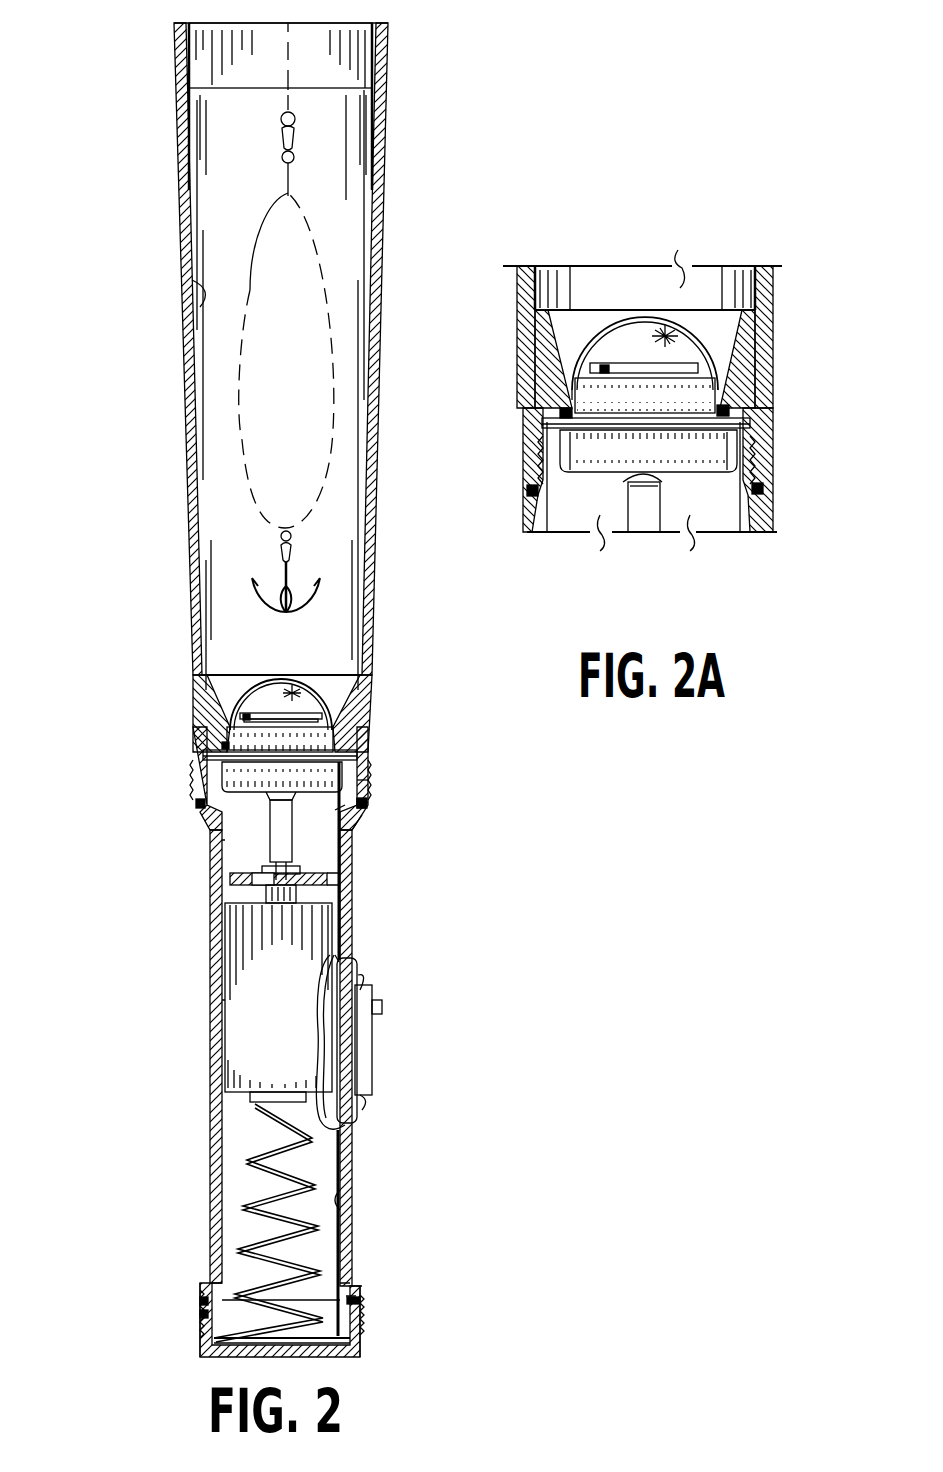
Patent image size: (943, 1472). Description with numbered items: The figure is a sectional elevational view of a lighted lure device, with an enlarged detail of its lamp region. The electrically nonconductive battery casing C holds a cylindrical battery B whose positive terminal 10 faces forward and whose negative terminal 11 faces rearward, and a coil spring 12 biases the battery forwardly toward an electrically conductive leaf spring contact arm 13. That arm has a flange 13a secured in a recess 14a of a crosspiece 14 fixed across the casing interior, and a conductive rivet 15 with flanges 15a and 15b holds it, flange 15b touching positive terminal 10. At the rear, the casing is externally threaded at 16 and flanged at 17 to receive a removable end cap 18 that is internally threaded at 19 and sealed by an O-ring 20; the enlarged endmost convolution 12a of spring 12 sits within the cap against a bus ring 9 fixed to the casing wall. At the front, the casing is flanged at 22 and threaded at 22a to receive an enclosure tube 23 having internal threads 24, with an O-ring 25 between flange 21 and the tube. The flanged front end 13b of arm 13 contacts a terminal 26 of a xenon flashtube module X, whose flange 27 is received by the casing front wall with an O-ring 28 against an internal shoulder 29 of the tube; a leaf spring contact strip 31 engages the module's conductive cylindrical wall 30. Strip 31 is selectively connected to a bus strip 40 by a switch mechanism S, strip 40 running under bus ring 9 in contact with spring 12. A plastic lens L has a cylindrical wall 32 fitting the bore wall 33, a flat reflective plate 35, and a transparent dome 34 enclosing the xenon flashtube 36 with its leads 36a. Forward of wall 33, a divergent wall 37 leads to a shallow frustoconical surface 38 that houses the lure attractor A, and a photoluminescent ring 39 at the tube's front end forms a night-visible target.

In FIG. 2, the photoluminescent ring 39 is at (335, 48).
In FIG. 2, the lure attractor A is at (290, 215).
In FIG. 2, the enclosure tube 23 is at (178, 232).
In FIG. 2, the frustoconical internal surface 38 is at (195, 288).
In FIG. 2, the divergent wall 37 is at (228, 705).
In FIG. 2, the bore wall 33 is at (192, 730).
In FIG. 2, the internal shoulder 29 is at (190, 734).
In FIG. 2A, the internal shoulder 29 is at (730, 408).
In FIG. 2, the front flange 22 is at (200, 805).
In FIG. 2, the external threads 22a is at (197, 788).
In FIG. 2, the leaf spring contact arm 13 is at (275, 820).
In FIG. 2A, the leaf spring contact arm 13 is at (645, 522).
In FIG. 2, the front flange of contact arm 13b is at (278, 830).
In FIG. 2, the contact arm flange 13a is at (266, 845).
In FIG. 2, the crosspiece 14 is at (235, 878).
In FIG. 2, the positive terminal 10 is at (208, 905).
In FIG. 2, the battery casing C is at (208, 945).
In FIG. 2, the battery B is at (237, 1003).
In FIG. 2, the negative terminal 11 is at (255, 1098).
In FIG. 2, the coil spring 12 is at (262, 1200).
In FIG. 2, the endmost convolution 12a is at (346, 1348).
In FIG. 2, the bus strip 40 is at (352, 1194).
In FIG. 2, the switch mechanism S is at (372, 1028).
In FIG. 2, the rivet 15 is at (345, 842).
In FIG. 2, the upper rivet flange 15a is at (343, 852).
In FIG. 2, the lower rivet flange 15b is at (343, 910).
In FIG. 2, the recess 14a is at (347, 937).
In FIG. 2, the internal threads of enclosure tube 24 is at (363, 795).
In FIG. 2, the front sealing O-ring 25 is at (367, 802).
In FIG. 2, the flange 21 is at (360, 813).
In FIG. 2, the rear sealing O-ring 20 is at (202, 1300).
In FIG. 2, the bus ring 9 is at (232, 1300).
In FIG. 2, the rear flange 17 is at (212, 1298).
In FIG. 2, the external rear threads 16 is at (205, 1315).
In FIG. 2, the internal threads of end cap 19 is at (360, 1317).
In FIG. 2, the end cap 18 is at (363, 1342).
In FIG. 2A, the lens L is at (612, 345).
In FIG. 2A, the transparent dome portion 34 is at (618, 362).
In FIG. 2A, the xenon flashtube 36 is at (631, 362).
In FIG. 2A, the flat reflective plate 35 is at (672, 387).
In FIG. 2A, the leads 36a is at (753, 308).
In FIG. 2A, the cylindrical wall of lens 32 is at (717, 378).
In FIG. 2A, the xenon flashtube module X is at (560, 395).
In FIG. 2A, the module sealing O-ring 28 is at (562, 412).
In FIG. 2A, the conductive cylindrical wall 30 is at (742, 446).
In FIG. 2A, the module terminal 26 is at (620, 478).
In FIG. 2A, the module flange 27 is at (553, 493).
In FIG. 2A, the leaf spring contact strip 31 is at (722, 492).